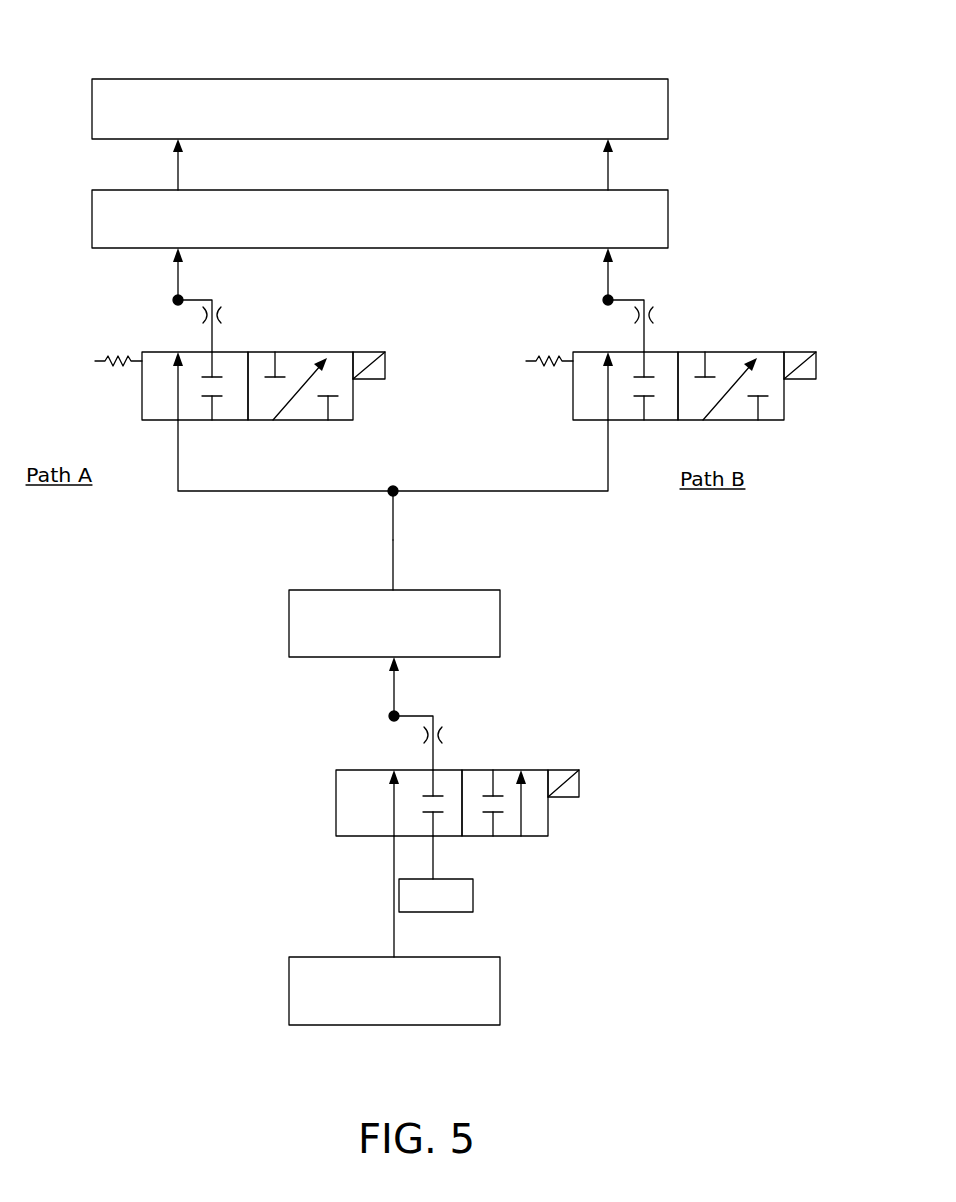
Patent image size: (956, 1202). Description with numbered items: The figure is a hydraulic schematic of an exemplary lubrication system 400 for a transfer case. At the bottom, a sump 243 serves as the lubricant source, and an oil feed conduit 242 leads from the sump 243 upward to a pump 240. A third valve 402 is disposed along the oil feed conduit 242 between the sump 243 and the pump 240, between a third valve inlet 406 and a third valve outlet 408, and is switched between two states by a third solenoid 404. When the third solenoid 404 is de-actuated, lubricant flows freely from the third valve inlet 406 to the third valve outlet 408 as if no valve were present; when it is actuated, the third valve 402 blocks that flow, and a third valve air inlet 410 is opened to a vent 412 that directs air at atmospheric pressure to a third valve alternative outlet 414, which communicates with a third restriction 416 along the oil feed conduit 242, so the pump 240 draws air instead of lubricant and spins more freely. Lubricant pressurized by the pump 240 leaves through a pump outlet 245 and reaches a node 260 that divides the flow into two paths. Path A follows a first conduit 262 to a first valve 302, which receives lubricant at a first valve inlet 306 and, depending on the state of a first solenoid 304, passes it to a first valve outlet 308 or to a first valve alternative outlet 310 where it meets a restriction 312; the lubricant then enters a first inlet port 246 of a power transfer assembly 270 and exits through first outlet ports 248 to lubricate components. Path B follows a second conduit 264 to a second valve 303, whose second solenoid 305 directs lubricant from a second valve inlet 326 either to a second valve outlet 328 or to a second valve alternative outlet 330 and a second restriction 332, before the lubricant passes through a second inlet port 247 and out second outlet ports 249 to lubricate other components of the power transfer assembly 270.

The lubrication system 400 is at (80, 70).
The power transfer assembly 270 is at (668, 219).
The first outlet ports 248 is at (180, 188).
The second outlet ports 249 is at (610, 188).
The first inlet port 246 is at (176, 250).
The second inlet port 247 is at (610, 251).
The first valve 302 is at (142, 406).
The second valve 303 is at (573, 406).
The first solenoid 304 is at (385, 366).
The second solenoid 305 is at (816, 366).
The first valve inlet 306 is at (175, 422).
The first valve outlet 308 is at (176, 352).
The first valve alternative outlet 310 is at (214, 352).
The restriction 312 is at (222, 316).
The second valve inlet 326 is at (605, 422).
The second valve outlet 328 is at (606, 352).
The second valve alternative outlet 330 is at (646, 352).
The second restriction 332 is at (654, 316).
The node 260 is at (398, 487).
The first conduit 262 is at (222, 493).
The second conduit 264 is at (530, 493).
The oil feed conduit 242 is at (395, 537).
The pump outlet 245 is at (395, 588).
The pump 240 is at (500, 625).
The sump 243 is at (500, 995).
The third valve 402 is at (336, 810).
The third solenoid 404 is at (579, 780).
The third valve inlet 406 is at (390, 838).
The third valve outlet 408 is at (393, 770).
The third valve air inlet 410 is at (433, 836).
The vent 412 is at (436, 912).
The third valve alternative outlet 414 is at (434, 770).
The third restriction 416 is at (443, 736).